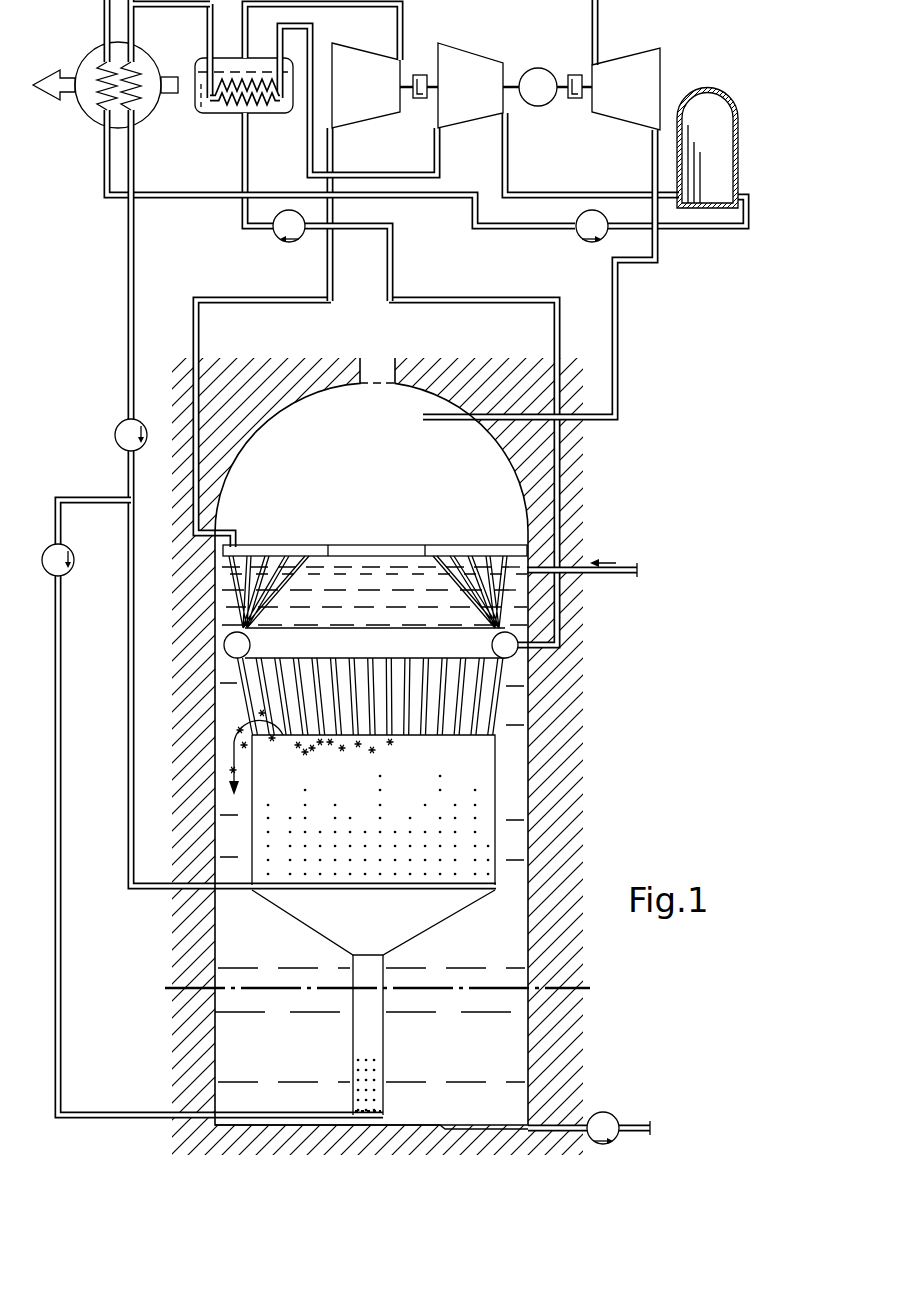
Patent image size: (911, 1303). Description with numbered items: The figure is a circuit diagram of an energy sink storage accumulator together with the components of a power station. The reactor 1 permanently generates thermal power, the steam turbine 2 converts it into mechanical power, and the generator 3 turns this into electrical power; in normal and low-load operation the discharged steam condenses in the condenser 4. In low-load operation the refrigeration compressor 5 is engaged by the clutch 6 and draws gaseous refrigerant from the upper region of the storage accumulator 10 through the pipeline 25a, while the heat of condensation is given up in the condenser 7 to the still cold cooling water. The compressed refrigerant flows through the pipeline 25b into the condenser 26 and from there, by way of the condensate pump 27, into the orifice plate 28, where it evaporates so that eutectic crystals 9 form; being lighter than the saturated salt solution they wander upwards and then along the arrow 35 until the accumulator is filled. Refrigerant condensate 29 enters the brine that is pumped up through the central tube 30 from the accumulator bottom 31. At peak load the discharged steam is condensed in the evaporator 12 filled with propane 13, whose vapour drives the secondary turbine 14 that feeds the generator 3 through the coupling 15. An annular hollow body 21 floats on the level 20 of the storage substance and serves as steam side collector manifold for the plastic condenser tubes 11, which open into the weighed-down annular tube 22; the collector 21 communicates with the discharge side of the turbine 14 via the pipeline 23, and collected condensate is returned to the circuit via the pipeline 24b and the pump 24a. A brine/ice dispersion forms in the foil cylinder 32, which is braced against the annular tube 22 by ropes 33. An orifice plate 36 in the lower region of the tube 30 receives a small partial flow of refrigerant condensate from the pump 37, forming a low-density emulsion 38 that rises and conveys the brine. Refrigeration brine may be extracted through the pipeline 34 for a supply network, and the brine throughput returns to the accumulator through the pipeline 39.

The reactor 1 is at (708, 100).
The steam turbine 2 is at (474, 60).
The generator 3 is at (538, 108).
The condenser 4 is at (92, 114).
The refrigeration compressor 5 is at (626, 62).
The clutch 6 is at (574, 72).
The condenser 7 is at (145, 112).
The eutectic crystals 9 is at (312, 752).
The storage accumulator 10 is at (581, 749).
The condenser tubes 11 is at (280, 605).
The evaporator 12 is at (195, 63).
The propane 13 is at (205, 112).
The secondary turbine 14 is at (368, 115).
The coupling 15 is at (418, 72).
The level 20 is at (371, 554).
The annular hollow body 21 is at (481, 545).
The annular tube 22 is at (224, 645).
The pipeline 23 is at (200, 340).
The pump 24a is at (289, 242).
The pipeline 24b is at (556, 334).
The pipeline 25a is at (618, 340).
The pipeline 25b is at (527, 0).
The condenser 26 is at (102, 58).
The condensate pump 27 is at (124, 422).
The orifice plate 28 is at (360, 893).
The refrigerant condensate 29 is at (366, 834).
The central tube 30 is at (386, 1030).
The accumulator bottom 31 is at (444, 1123).
The foil cylinder 32 is at (496, 812).
The ropes 33 is at (366, 692).
The pipeline 34 is at (626, 1120).
The arrow 35 is at (238, 774).
The orifice plate 36 is at (377, 1112).
The pump 37 is at (70, 575).
The emulsion 38 is at (353, 1055).
The pipeline 39 is at (600, 578).